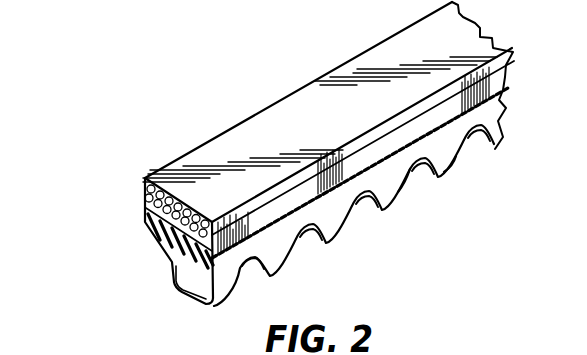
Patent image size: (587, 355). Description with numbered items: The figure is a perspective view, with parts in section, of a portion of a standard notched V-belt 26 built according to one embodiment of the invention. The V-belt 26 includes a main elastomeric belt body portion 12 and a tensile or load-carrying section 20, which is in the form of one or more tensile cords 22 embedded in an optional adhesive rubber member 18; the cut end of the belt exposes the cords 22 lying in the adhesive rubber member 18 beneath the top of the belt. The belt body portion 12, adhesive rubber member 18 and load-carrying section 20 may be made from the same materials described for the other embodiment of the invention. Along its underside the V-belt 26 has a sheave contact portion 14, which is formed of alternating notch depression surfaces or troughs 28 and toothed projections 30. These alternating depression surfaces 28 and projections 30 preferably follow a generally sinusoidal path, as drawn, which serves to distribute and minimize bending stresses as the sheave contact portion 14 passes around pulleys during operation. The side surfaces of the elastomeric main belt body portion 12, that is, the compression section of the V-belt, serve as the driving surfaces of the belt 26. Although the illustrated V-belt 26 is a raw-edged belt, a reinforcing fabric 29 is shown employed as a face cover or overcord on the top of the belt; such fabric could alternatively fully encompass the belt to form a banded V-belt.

The main elastomeric belt body portion 12 is at (146, 225).
The sheave contact portion 14 is at (333, 237).
The adhesive rubber member 18 is at (149, 178).
The load-carrying section 20 is at (145, 203).
The tensile cords 22 is at (180, 250).
The V-belt 26 is at (223, 108).
The notch depression surfaces 28 is at (410, 173).
The reinforcing fabric 29 is at (148, 191).
The toothed projections 30 is at (448, 165).